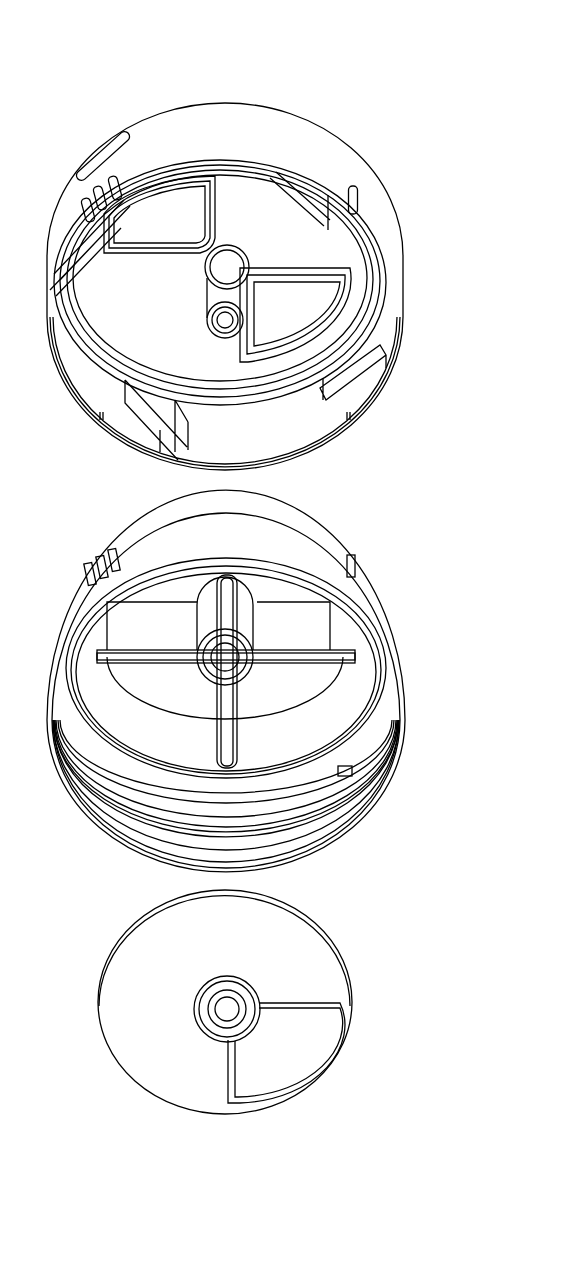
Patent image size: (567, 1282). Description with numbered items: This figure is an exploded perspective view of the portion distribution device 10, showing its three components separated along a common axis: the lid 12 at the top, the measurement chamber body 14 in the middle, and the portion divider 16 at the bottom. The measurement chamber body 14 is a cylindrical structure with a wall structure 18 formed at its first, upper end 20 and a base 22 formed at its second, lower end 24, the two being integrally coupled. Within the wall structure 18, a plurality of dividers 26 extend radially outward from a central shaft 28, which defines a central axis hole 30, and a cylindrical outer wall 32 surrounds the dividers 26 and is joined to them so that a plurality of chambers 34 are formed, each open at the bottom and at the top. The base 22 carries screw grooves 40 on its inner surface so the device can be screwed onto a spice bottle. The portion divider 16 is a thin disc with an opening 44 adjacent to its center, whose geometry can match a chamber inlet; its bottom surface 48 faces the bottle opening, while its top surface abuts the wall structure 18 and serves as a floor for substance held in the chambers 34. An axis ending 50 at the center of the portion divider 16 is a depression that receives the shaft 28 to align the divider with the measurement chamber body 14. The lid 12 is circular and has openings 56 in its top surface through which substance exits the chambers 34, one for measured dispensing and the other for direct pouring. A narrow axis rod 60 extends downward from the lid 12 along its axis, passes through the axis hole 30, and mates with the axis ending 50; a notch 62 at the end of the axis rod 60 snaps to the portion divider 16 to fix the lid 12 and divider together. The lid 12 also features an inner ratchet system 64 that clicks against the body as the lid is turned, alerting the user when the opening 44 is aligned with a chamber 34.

The portion distribution device 10 is at (292, 48).
The lid 12 is at (82, 126).
The measurement chamber body 14 is at (83, 536).
The portion divider 16 is at (92, 933).
The wall structure 18 is at (366, 680).
The first (upper) end 20 is at (356, 514).
The base 22 is at (350, 822).
The second (lower) end 24 is at (92, 837).
The dividers 26 is at (156, 624).
The shaft 28 is at (248, 642).
The central axis hole 30 is at (224, 668).
The cylindrical outer wall 32 is at (318, 713).
The chambers 34 is at (197, 699).
The grooves 40 is at (303, 824).
The opening 44 is at (292, 1052).
The bottom surface 48 is at (170, 997).
The axis ending 50 is at (217, 1036).
The opening 56 is at (174, 227).
The axis rod 60 is at (222, 282).
The notch 62 is at (220, 335).
The inner ratchet system 64 is at (333, 380).